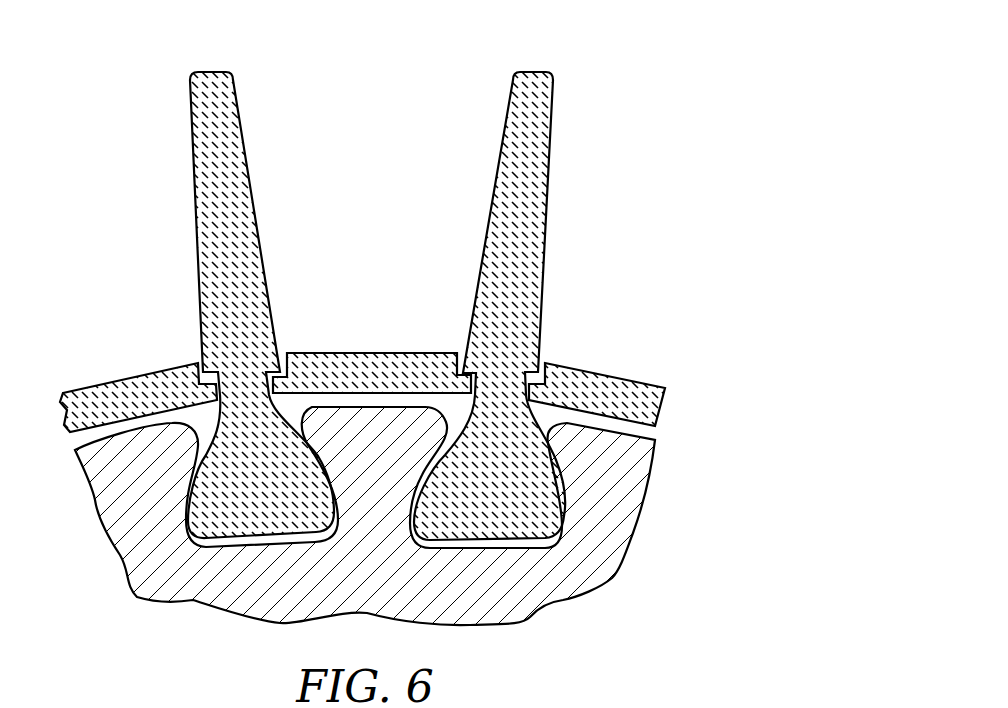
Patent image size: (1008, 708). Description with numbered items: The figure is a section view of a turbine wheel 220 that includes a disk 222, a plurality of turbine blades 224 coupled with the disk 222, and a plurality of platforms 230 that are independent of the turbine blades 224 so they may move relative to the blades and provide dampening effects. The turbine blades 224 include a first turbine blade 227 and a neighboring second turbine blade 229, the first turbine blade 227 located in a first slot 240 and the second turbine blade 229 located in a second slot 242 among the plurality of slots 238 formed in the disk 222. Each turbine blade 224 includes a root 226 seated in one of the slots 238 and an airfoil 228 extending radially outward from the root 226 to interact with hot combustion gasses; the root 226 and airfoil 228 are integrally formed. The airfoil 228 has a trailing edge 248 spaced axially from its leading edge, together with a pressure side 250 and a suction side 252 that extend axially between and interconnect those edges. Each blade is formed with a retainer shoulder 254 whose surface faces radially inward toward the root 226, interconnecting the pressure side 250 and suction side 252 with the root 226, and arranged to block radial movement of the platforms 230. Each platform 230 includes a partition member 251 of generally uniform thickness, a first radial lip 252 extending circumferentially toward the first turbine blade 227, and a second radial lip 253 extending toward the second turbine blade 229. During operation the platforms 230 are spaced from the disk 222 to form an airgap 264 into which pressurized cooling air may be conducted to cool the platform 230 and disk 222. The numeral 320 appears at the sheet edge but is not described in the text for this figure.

The turbine wheel 220 is at (715, 121).
The disk 222 is at (142, 565).
The turbine blades 224 is at (180, 130).
The root 226 is at (197, 515).
The first turbine blade 227 is at (250, 108).
The airfoil 228 is at (199, 259).
The second turbine blade 229 is at (496, 123).
The platforms 230 is at (362, 333).
The slots 238 is at (240, 554).
The first slot 240 is at (308, 544).
The second slot 242 is at (491, 549).
The trailing edge 248 is at (238, 162).
The pressure side 250 is at (268, 266).
The partition member 251 is at (377, 377).
The suction side 252 is at (199, 308).
The second radial lip 253 is at (463, 392).
The retainer shoulder 254 is at (210, 398).
The airgap 264 is at (643, 434).
The rotor assembly (next figure) 320 is at (768, 707).